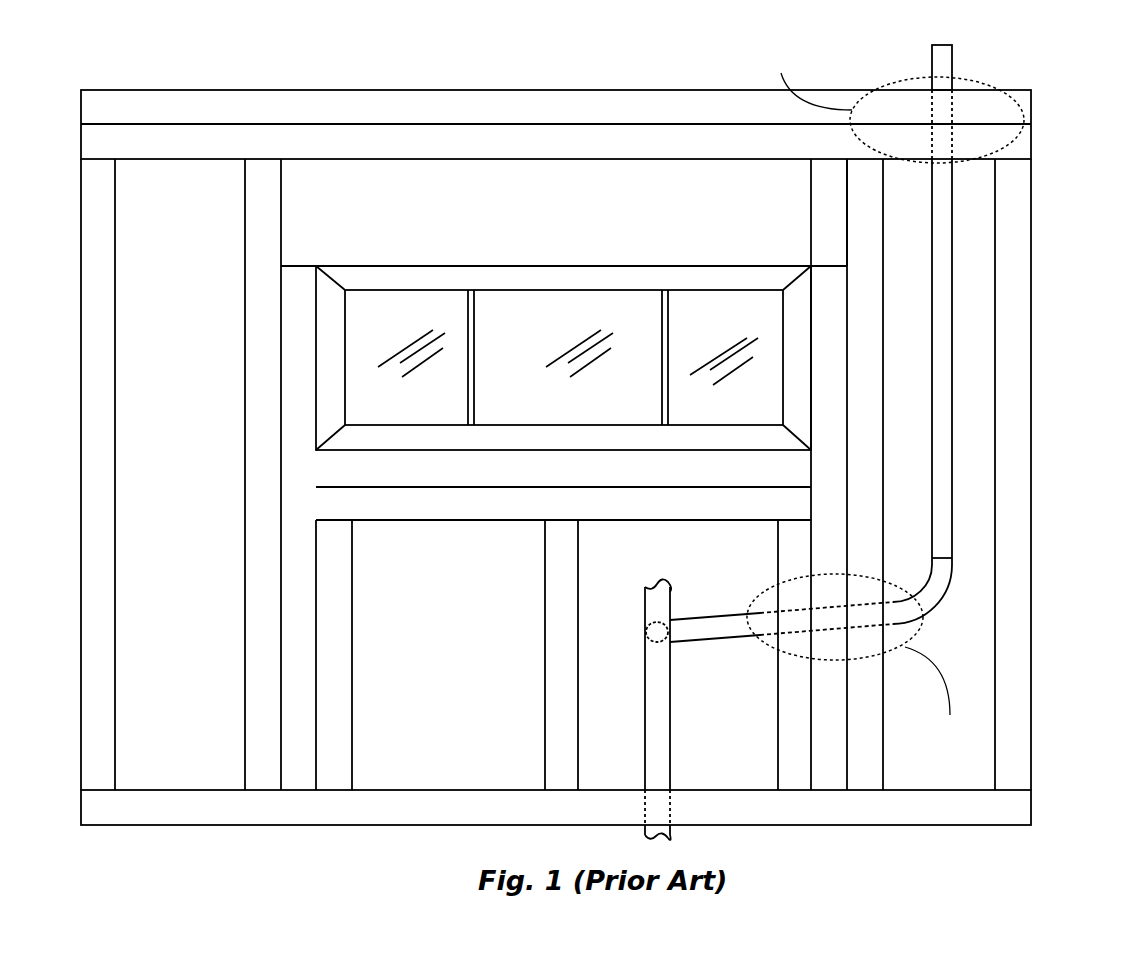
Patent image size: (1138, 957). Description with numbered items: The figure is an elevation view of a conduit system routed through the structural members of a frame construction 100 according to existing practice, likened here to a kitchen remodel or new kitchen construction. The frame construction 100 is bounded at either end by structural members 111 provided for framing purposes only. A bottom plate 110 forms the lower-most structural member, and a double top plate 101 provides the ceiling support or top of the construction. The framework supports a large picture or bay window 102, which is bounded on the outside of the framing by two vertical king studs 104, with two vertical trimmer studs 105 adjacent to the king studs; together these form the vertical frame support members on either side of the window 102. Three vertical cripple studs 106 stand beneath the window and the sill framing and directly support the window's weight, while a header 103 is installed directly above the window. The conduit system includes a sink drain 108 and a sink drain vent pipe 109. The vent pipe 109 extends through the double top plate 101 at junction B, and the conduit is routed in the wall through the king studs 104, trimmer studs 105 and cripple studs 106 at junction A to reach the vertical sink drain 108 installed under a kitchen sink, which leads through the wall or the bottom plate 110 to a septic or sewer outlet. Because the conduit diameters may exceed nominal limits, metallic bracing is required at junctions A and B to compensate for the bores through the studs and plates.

The frame construction 100 is at (1077, 652).
The double top plate 101 is at (563, 159).
The window 102 is at (492, 266).
The header 103 is at (848, 200).
The king studs 104 is at (245, 297).
The trimmer studs 105 is at (281, 563).
The cripple studs 106 is at (352, 607).
The sink drain 108 is at (670, 745).
The sink drain vent pipe 109 is at (952, 410).
The bottom plate 110 is at (483, 780).
The structural members 111 is at (115, 613).